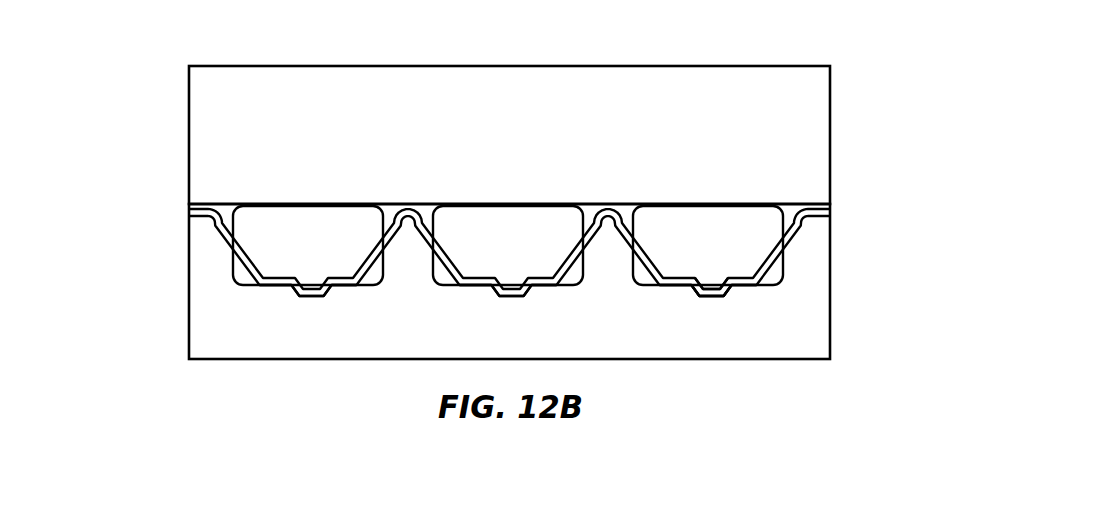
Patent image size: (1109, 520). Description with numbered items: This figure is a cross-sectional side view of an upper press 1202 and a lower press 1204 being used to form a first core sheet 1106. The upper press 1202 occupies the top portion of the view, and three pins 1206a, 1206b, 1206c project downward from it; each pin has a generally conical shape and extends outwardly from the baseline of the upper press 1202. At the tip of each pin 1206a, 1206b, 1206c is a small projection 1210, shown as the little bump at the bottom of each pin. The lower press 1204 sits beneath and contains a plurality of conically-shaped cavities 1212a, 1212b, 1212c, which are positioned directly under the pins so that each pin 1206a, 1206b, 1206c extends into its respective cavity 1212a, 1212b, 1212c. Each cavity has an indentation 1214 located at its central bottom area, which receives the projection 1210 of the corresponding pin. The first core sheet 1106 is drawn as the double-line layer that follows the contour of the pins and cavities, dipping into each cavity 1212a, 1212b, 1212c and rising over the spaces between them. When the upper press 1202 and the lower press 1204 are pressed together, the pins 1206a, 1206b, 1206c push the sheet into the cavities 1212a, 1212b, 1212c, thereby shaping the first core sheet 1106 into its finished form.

The upper press 1202 is at (724, 50).
The lower press 1204 is at (725, 378).
The first core sheet 1106 is at (783, 253).
The pin 1206a is at (350, 244).
The pin 1206b is at (551, 244).
The pin 1206c is at (750, 244).
The cavity 1212a is at (243, 270).
The cavity 1212b is at (448, 275).
The cavity 1212c is at (650, 273).
The projection 1210 is at (695, 296).
The indentation 1214 is at (721, 303).